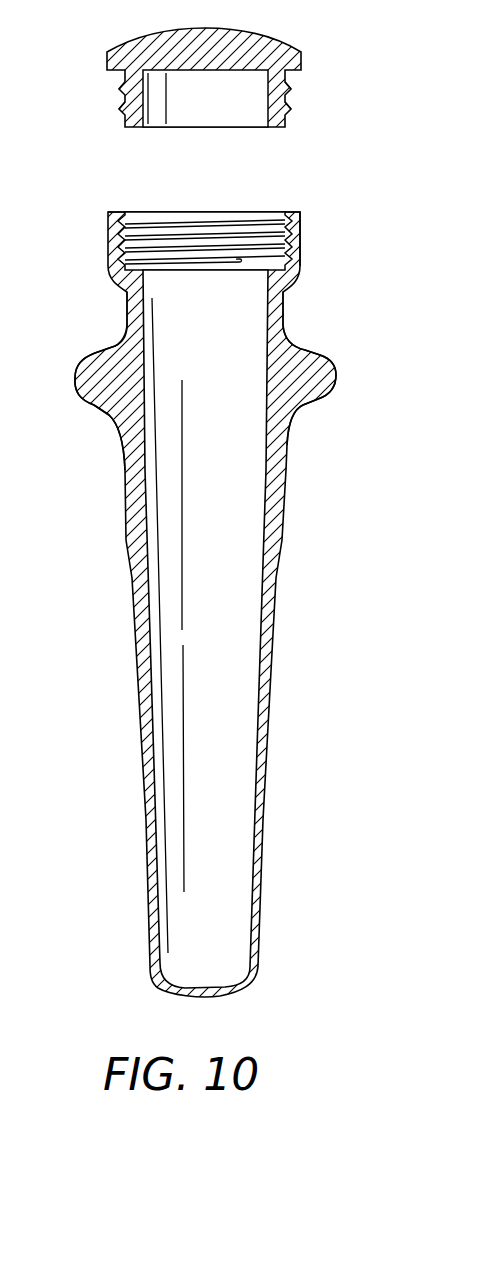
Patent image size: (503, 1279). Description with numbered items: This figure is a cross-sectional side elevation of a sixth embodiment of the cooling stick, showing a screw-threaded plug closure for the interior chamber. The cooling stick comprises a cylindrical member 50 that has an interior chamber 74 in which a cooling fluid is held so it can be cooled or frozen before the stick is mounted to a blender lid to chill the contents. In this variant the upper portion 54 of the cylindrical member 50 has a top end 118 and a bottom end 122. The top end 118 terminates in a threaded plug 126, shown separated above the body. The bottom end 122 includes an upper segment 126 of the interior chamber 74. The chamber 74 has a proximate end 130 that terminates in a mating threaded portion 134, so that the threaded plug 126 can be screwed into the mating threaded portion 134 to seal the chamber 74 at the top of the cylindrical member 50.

The top end 118 is at (295, 49).
The threaded plug 126 is at (300, 71).
The mating threaded portion 134 is at (185, 222).
The proximate end 130 is at (300, 212).
The upper portion 54 is at (297, 333).
The bottom end 122 is at (318, 357).
The interior chamber 74 is at (233, 450).
The cylindrical member 50 is at (248, 534).